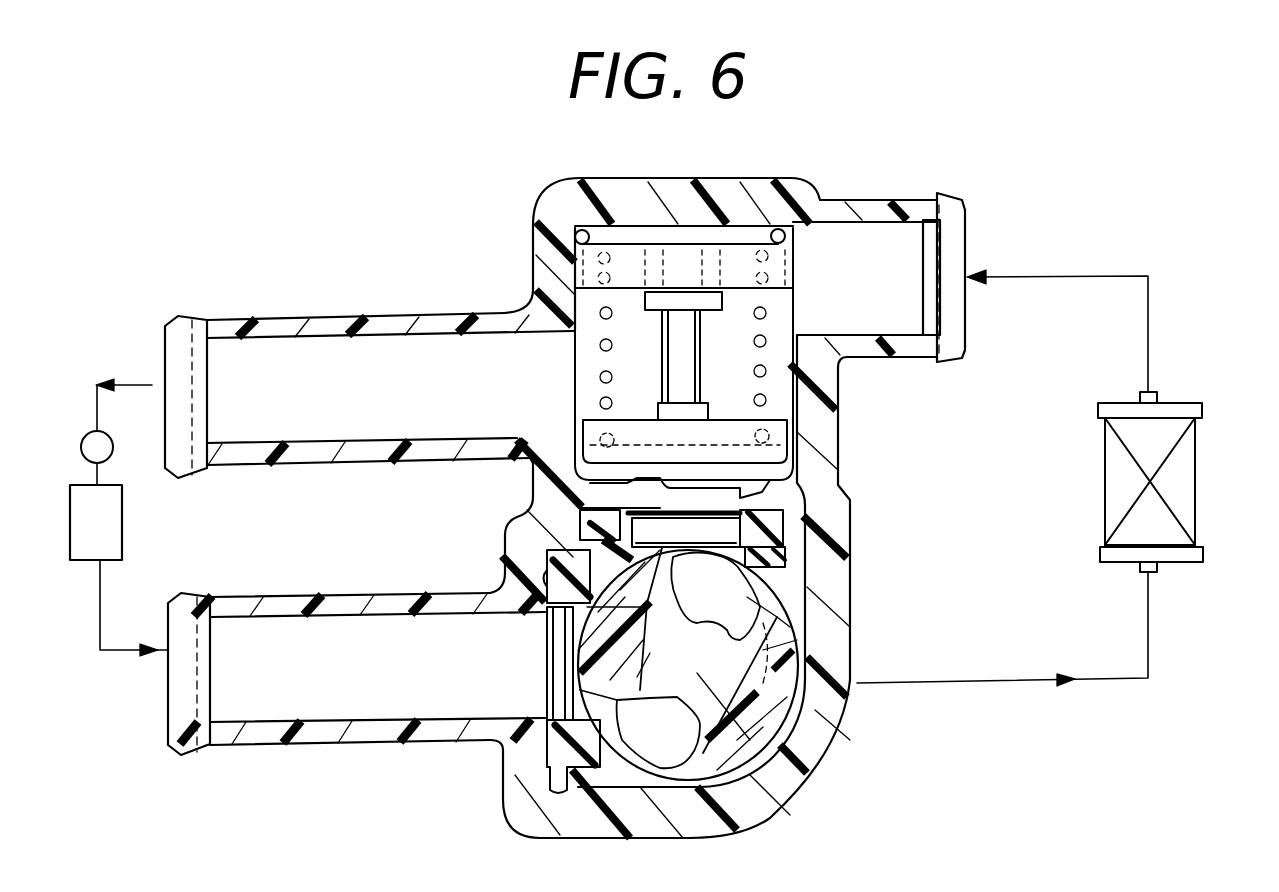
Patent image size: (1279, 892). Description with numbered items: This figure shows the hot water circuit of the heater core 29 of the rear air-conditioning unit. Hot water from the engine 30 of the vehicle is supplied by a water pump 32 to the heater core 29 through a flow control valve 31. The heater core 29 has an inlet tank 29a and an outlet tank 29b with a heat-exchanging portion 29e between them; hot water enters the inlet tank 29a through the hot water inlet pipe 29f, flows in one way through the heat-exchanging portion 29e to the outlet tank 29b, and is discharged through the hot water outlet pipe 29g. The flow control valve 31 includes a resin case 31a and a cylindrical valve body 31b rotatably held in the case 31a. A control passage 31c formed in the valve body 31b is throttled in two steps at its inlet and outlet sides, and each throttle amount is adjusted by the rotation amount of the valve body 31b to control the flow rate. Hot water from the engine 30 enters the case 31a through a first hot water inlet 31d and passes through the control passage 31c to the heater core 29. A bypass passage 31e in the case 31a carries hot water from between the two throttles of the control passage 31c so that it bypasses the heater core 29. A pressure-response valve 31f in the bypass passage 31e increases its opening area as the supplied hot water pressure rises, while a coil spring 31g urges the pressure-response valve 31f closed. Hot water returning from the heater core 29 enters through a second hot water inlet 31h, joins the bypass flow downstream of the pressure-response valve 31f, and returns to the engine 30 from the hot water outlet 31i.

The heater core 29 is at (1198, 467).
The inlet tank 29a is at (1170, 553).
The outlet tank 29b is at (1182, 408).
The heat-exchanging portion 29e is at (1180, 507).
The hot water inlet pipe 29f is at (1150, 675).
The hot water outlet pipe 29g is at (1152, 342).
The engine 30 is at (122, 508).
The flow control valve 31 is at (502, 817).
The case 31a is at (570, 817).
The valve body 31b is at (790, 708).
The control passage 31c is at (790, 747).
The first hot water inlet 31d is at (307, 692).
The bypass passage 31e is at (760, 500).
The pressure-response valve 31f is at (775, 445).
The coil spring 31g is at (600, 345).
The second hot water inlet 31h is at (868, 272).
The hot water outlet 31i is at (350, 385).
The water pump 32 is at (82, 445).